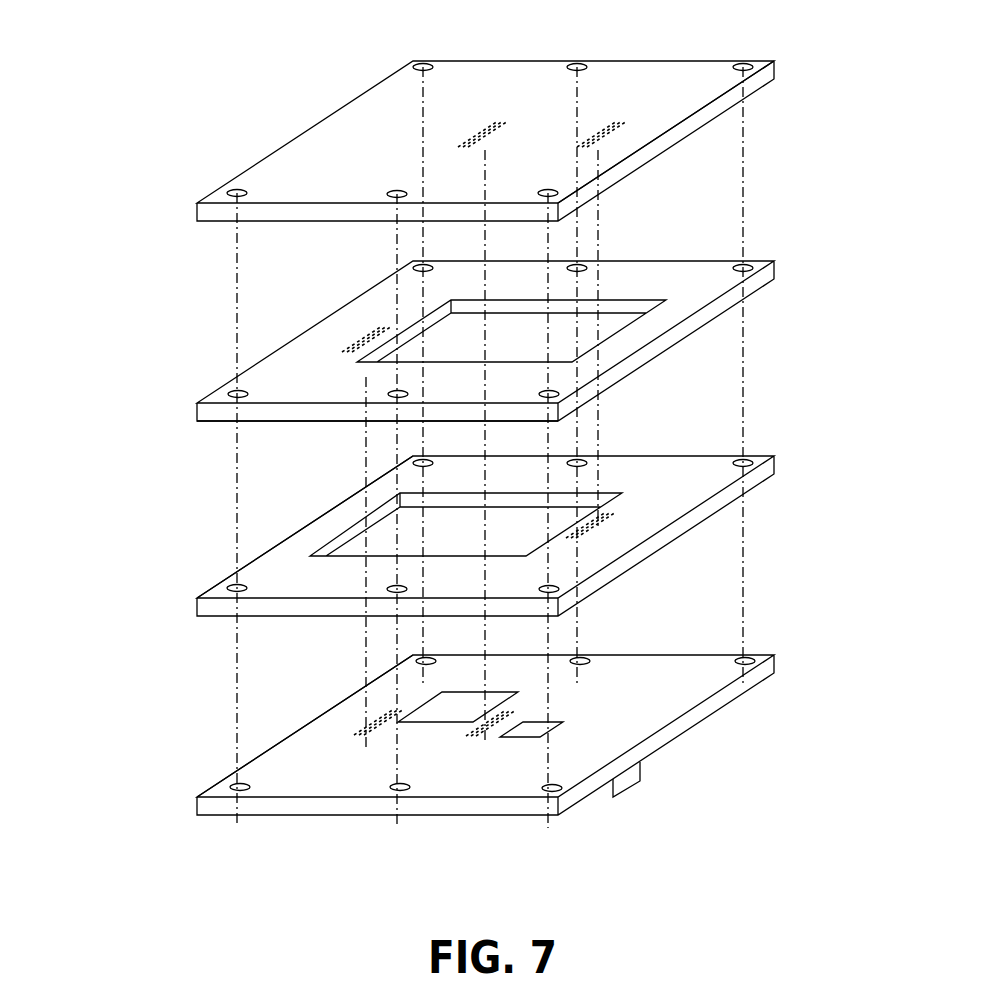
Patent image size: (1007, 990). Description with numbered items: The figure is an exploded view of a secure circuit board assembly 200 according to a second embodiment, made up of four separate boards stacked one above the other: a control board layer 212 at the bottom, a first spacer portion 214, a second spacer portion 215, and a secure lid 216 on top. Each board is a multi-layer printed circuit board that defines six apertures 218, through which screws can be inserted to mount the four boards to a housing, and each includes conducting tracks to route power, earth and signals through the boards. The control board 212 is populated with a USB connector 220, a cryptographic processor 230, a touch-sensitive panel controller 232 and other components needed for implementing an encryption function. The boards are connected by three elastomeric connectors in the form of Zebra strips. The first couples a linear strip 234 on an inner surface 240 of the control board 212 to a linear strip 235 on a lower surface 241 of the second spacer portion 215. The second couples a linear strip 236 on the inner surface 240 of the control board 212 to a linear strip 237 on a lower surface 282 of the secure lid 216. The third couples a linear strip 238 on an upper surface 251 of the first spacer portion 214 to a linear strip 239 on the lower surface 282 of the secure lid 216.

The secure circuit board assembly 200 is at (146, 110).
The control board layer 212 is at (670, 733).
The first spacer portion 214 is at (700, 515).
The second spacer portion 215 is at (745, 295).
The secure lid 216 is at (776, 72).
The apertures 218 is at (420, 64).
The USB connector 220 is at (635, 787).
The cryptographic processor 230 is at (560, 722).
The touch-sensitive panel controller 232 is at (478, 700).
The linear strip 234 is at (358, 722).
The linear strip 235 is at (358, 335).
The linear strip 236 is at (465, 728).
The linear strip 237 is at (492, 122).
The linear strip 238 is at (610, 512).
The linear strip 239 is at (606, 122).
The inner surface 240 is at (333, 783).
The lower surface 241 is at (325, 420).
The upper surface 251 is at (323, 530).
The lower surface 282 is at (722, 110).